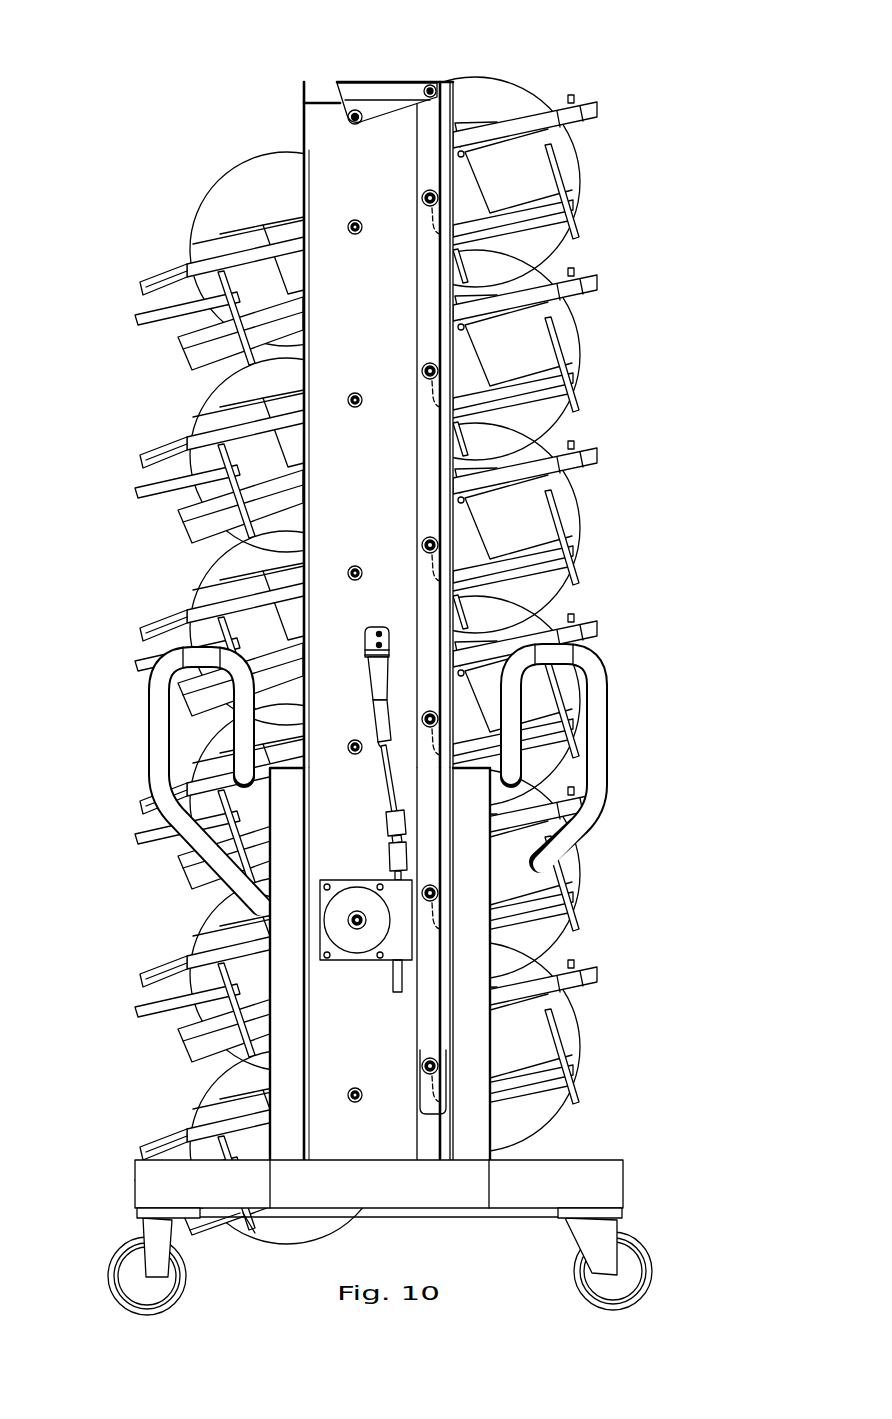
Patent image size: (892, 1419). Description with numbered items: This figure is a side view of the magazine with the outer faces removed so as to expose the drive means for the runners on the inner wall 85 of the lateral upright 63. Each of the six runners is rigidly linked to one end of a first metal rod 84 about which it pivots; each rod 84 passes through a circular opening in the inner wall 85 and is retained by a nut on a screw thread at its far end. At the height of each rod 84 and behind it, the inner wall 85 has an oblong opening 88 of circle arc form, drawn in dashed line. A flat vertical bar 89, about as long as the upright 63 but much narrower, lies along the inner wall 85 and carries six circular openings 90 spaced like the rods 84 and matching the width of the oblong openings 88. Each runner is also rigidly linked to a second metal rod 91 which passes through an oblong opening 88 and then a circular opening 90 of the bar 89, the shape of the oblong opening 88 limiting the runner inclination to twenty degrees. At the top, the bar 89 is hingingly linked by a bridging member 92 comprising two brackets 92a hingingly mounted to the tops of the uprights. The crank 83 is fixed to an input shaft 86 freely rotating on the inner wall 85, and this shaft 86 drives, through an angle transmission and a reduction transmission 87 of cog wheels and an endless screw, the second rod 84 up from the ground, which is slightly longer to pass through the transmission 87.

The lateral upright 63 is at (468, 70).
The crank 83 is at (362, 737).
The first metal rod 84 is at (356, 218).
The inner wall 85 is at (308, 135).
The input shaft 86 is at (377, 626).
The reduction transmission 87 is at (350, 860).
The oblong opening 88 is at (420, 236).
The flat vertical bar 89 is at (427, 455).
The circular opening 90 is at (425, 193).
The second metal rod 91 is at (443, 720).
The bridging member 92 is at (343, 70).
The bracket 92a is at (388, 87).